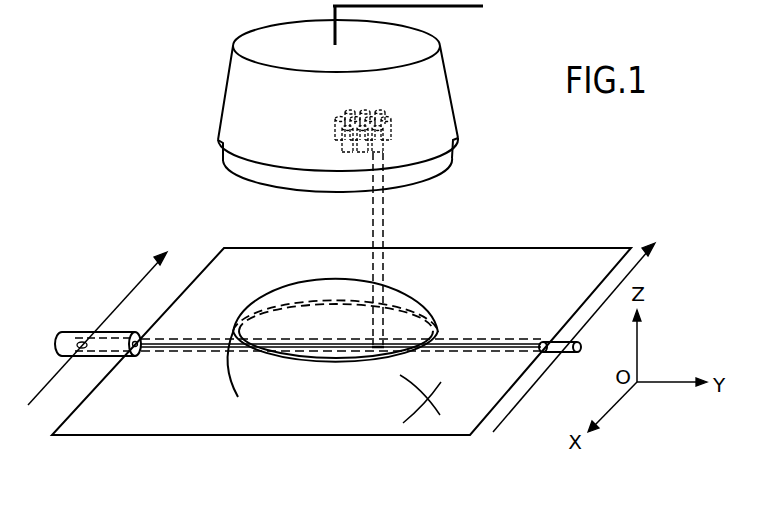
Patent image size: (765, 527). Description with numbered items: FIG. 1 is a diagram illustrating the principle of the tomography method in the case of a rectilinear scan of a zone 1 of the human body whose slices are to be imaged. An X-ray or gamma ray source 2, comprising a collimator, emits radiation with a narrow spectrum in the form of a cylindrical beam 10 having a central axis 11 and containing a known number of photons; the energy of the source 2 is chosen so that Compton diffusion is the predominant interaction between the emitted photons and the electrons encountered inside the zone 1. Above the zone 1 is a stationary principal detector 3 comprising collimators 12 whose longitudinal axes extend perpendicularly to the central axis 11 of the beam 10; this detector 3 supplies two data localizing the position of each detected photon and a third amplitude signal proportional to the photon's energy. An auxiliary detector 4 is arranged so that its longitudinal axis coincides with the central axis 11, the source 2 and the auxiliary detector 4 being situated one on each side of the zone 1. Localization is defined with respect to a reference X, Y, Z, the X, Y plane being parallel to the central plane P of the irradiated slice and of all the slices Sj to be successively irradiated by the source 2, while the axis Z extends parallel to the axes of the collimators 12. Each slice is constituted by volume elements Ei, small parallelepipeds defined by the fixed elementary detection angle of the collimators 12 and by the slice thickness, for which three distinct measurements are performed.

The zone of the human body 1 is at (438, 335).
The X-ray or gamma ray source 2 is at (78, 340).
The stationary principal detector 3 is at (255, 127).
The auxiliary detector 4 is at (560, 344).
The cylindrical beam 10 is at (177, 351).
The central axis 11 is at (203, 346).
The collimators 12 is at (367, 110).
The central plane of the slice P is at (107, 417).
The slices Sj is at (342, 357).
The volume elements Ei is at (379, 357).